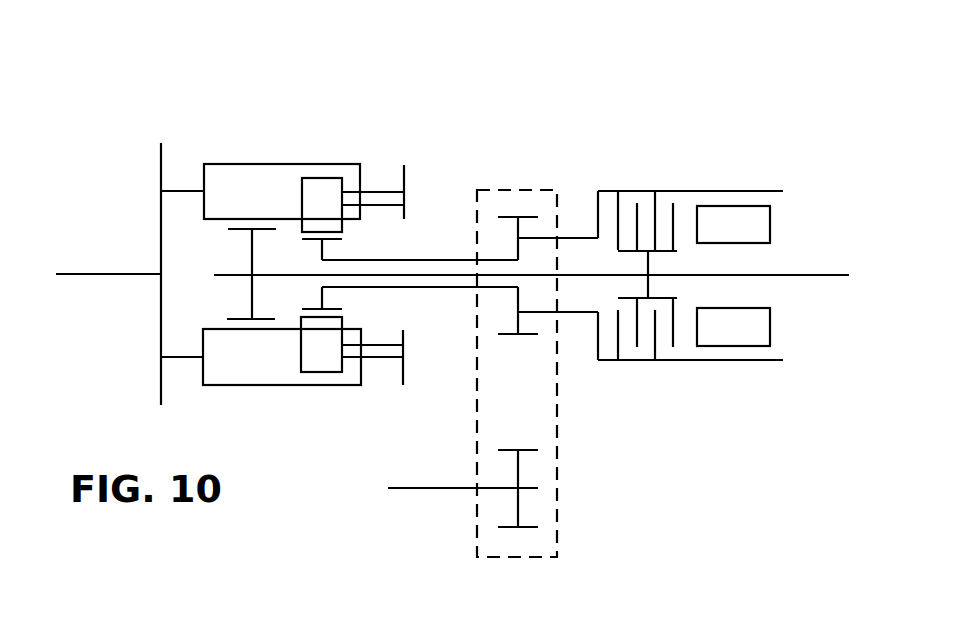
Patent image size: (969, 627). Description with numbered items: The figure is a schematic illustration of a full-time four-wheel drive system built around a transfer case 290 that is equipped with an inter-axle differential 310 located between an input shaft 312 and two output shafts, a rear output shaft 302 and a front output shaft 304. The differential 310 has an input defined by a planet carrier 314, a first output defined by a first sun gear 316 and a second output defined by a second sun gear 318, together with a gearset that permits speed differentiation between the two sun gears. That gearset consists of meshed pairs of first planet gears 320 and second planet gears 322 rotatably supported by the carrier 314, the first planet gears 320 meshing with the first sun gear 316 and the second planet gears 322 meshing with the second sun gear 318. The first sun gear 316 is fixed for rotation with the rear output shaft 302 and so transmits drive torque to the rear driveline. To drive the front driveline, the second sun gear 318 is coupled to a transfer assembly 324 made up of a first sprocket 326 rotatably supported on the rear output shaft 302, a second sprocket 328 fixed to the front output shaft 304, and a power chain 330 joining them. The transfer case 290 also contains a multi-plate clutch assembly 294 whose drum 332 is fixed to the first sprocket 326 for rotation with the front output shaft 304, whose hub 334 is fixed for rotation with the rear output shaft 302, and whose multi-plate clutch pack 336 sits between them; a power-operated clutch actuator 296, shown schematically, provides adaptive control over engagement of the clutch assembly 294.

The transfer case 290 is at (744, 227).
The multi-plate clutch assembly 294 is at (621, 178).
The power-operated clutch actuator 296 is at (782, 205).
The rear output shaft 302 is at (800, 275).
The front output shaft 304 is at (424, 488).
The inter-axle differential 310 is at (361, 171).
The input shaft 312 is at (93, 274).
The planet carrier 314 is at (160, 172).
The first sun gear 316 is at (251, 258).
The second sun gear 318 is at (325, 252).
The first planet gears 320 is at (243, 188).
The second planet gears 322 is at (318, 356).
The transfer assembly 324 is at (582, 358).
The first sprocket 326 is at (528, 217).
The second sprocket 328 is at (518, 478).
The power chain 330 is at (535, 558).
The drum 332 is at (752, 361).
The hub 334 is at (650, 259).
The multi-plate clutch pack 336 is at (659, 202).